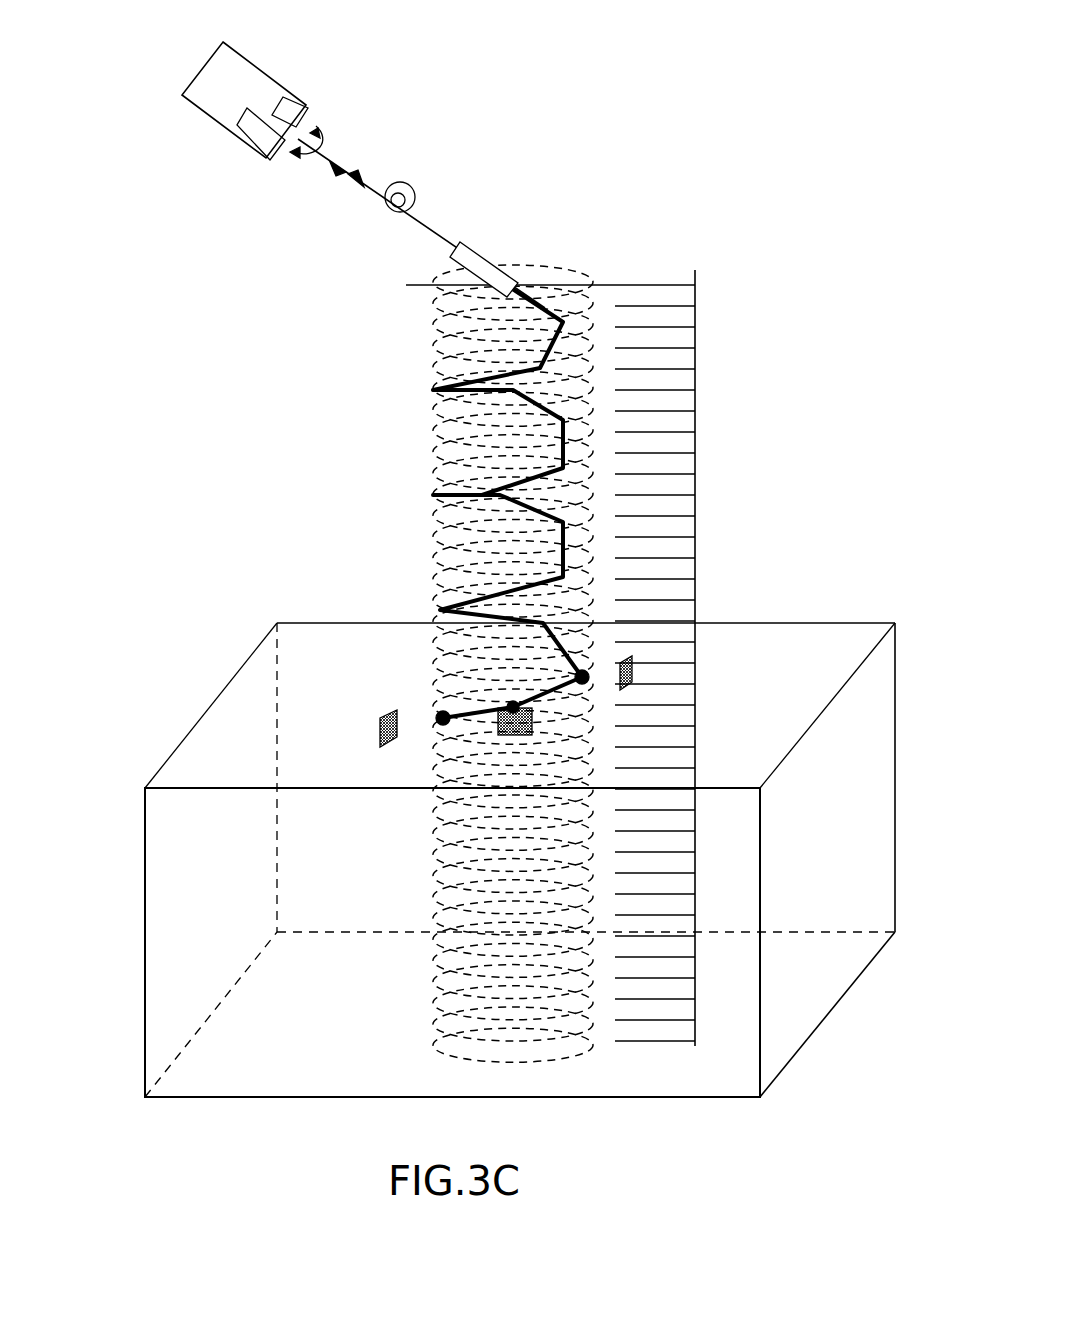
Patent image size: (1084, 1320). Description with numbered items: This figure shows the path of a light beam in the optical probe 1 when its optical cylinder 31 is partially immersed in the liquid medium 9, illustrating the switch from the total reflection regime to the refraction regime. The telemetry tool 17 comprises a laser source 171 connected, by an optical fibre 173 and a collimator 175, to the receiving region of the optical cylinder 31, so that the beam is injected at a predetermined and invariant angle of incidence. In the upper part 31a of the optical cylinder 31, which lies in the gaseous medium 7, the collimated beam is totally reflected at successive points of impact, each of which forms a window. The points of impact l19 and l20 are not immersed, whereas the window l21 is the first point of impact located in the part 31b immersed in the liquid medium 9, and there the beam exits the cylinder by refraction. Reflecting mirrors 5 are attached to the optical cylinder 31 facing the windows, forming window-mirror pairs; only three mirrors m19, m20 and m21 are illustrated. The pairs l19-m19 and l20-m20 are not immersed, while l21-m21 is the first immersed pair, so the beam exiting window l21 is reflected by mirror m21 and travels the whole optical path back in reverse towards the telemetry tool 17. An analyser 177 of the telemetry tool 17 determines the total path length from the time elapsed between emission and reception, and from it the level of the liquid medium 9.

The optical probe 1 is at (552, 892).
The reflecting mirrors 5 is at (337, 747).
The gaseous medium 7 is at (808, 558).
The liquid medium 9 is at (858, 827).
The telemetry tool 17 is at (368, 175).
The optical cylinder 31 is at (461, 650).
The non-immersed part of the optical cylinder 31a is at (433, 378).
The immersed part of the optical cylinder 31b is at (435, 880).
The laser source 171 is at (292, 110).
The optical fibre 173 is at (434, 231).
The collimator 175 is at (482, 252).
The analyser 177 is at (258, 127).
The point of impact l19 is at (586, 674).
The point of impact l20 is at (513, 707).
The point of impact l21 is at (443, 717).
The reflecting mirror m19 is at (72, 728).
The reflecting mirror m20 is at (500, 735).
The reflecting mirror m21 is at (378, 725).